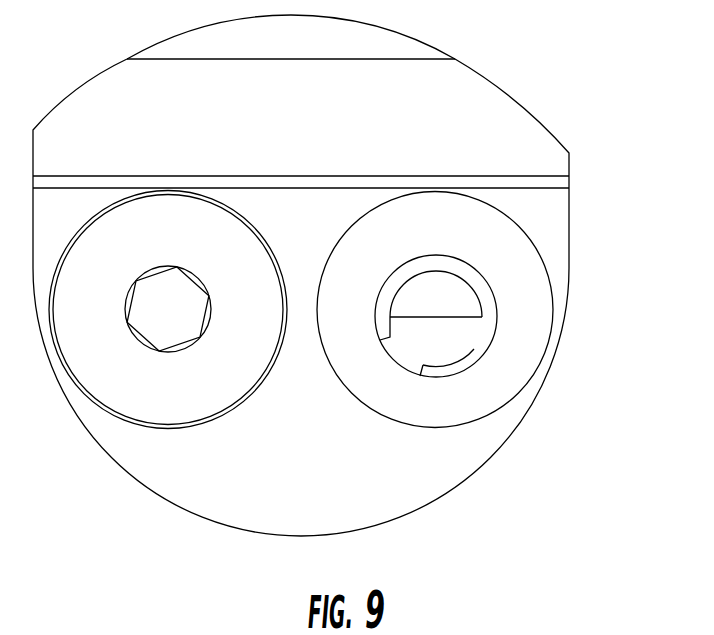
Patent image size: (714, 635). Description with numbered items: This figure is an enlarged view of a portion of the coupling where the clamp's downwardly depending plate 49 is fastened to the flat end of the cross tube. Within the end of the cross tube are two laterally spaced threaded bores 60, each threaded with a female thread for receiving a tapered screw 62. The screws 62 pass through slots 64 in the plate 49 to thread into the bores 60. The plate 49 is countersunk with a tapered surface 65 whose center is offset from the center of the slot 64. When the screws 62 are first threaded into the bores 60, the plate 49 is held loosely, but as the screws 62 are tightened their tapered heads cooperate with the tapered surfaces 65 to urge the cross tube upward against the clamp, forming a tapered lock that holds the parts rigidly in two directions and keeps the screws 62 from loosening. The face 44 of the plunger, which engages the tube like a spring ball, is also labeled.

The ultra-high-molecular-weight polyethylene face 44 is at (333, 282).
The plate 49 is at (172, 490).
The threaded bore 60 is at (453, 347).
The tapered screw 62 is at (108, 400).
The slot 64 is at (488, 288).
The tapered surface 65 is at (497, 229).